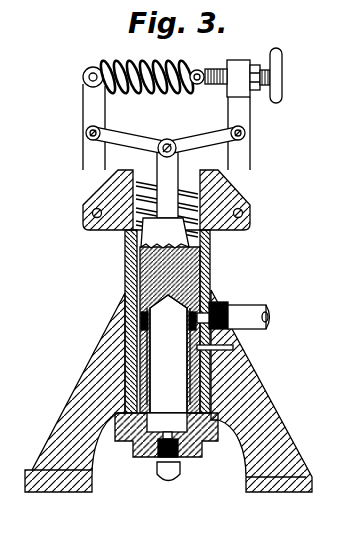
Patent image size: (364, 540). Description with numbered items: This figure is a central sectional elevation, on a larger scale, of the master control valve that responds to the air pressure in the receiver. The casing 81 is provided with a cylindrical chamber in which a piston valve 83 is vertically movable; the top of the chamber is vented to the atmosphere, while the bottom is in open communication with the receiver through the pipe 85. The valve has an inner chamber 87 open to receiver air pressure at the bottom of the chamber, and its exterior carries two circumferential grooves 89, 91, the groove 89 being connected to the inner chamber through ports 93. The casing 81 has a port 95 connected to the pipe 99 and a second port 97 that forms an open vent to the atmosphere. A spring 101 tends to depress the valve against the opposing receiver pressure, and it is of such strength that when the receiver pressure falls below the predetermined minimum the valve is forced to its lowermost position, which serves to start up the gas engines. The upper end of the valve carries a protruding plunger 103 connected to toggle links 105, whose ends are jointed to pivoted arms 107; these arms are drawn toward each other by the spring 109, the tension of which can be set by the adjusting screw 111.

The casing 81 is at (207, 261).
The piston valve 83 is at (143, 281).
The pipe 85 is at (167, 473).
The inner chamber 87 is at (190, 450).
The circumferential groove 89 is at (187, 330).
The circumferential groove 91 is at (188, 368).
The ports 93 is at (188, 321).
The port 95 is at (212, 302).
The port 97 is at (235, 348).
The pipe 99 is at (258, 312).
The spring 101 is at (122, 237).
The plunger 103 is at (155, 162).
The toggle links 105 is at (193, 140).
The pivoted arms 107 is at (98, 108).
The spring 109 is at (107, 62).
The adjusting screw 111 is at (280, 77).